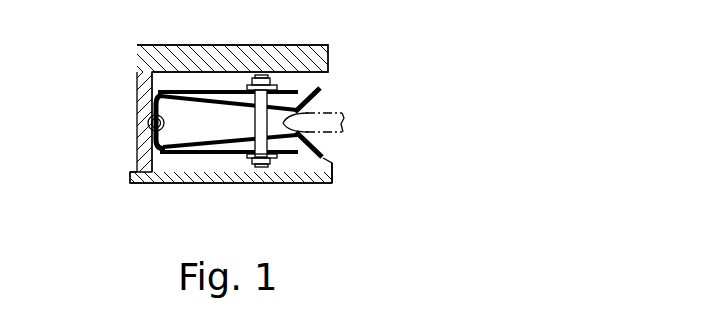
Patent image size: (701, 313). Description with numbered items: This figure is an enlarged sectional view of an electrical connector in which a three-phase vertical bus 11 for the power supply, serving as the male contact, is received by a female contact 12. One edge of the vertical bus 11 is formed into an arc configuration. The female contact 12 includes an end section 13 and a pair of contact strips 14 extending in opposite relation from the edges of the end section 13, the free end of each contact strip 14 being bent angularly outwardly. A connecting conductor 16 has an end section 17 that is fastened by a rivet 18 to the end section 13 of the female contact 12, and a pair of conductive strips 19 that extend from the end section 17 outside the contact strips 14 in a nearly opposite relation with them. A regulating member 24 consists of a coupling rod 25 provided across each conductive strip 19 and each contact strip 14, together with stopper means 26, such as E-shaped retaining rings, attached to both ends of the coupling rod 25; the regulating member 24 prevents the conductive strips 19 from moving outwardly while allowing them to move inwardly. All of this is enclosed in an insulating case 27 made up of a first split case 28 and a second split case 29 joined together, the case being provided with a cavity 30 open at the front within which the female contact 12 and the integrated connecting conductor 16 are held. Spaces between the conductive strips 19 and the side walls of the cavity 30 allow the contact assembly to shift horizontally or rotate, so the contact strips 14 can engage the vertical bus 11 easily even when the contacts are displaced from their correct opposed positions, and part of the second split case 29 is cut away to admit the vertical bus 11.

The vertical bus 11 is at (345, 111).
The female contact 12 is at (329, 92).
The end section 13 is at (148, 150).
The contact strip 14 is at (220, 100).
The connecting conductor 16 is at (164, 166).
The end section 17 is at (140, 90).
The rivet 18 is at (148, 123).
The conductive strip 19 is at (232, 90).
The regulating member 24 is at (290, 167).
The coupling rod 25 is at (306, 132).
The stopper means 26 is at (268, 78).
The insulating case 27 is at (116, 83).
The first split case 28 is at (152, 58).
The second split case 29 is at (333, 180).
The cavity 30 is at (178, 168).